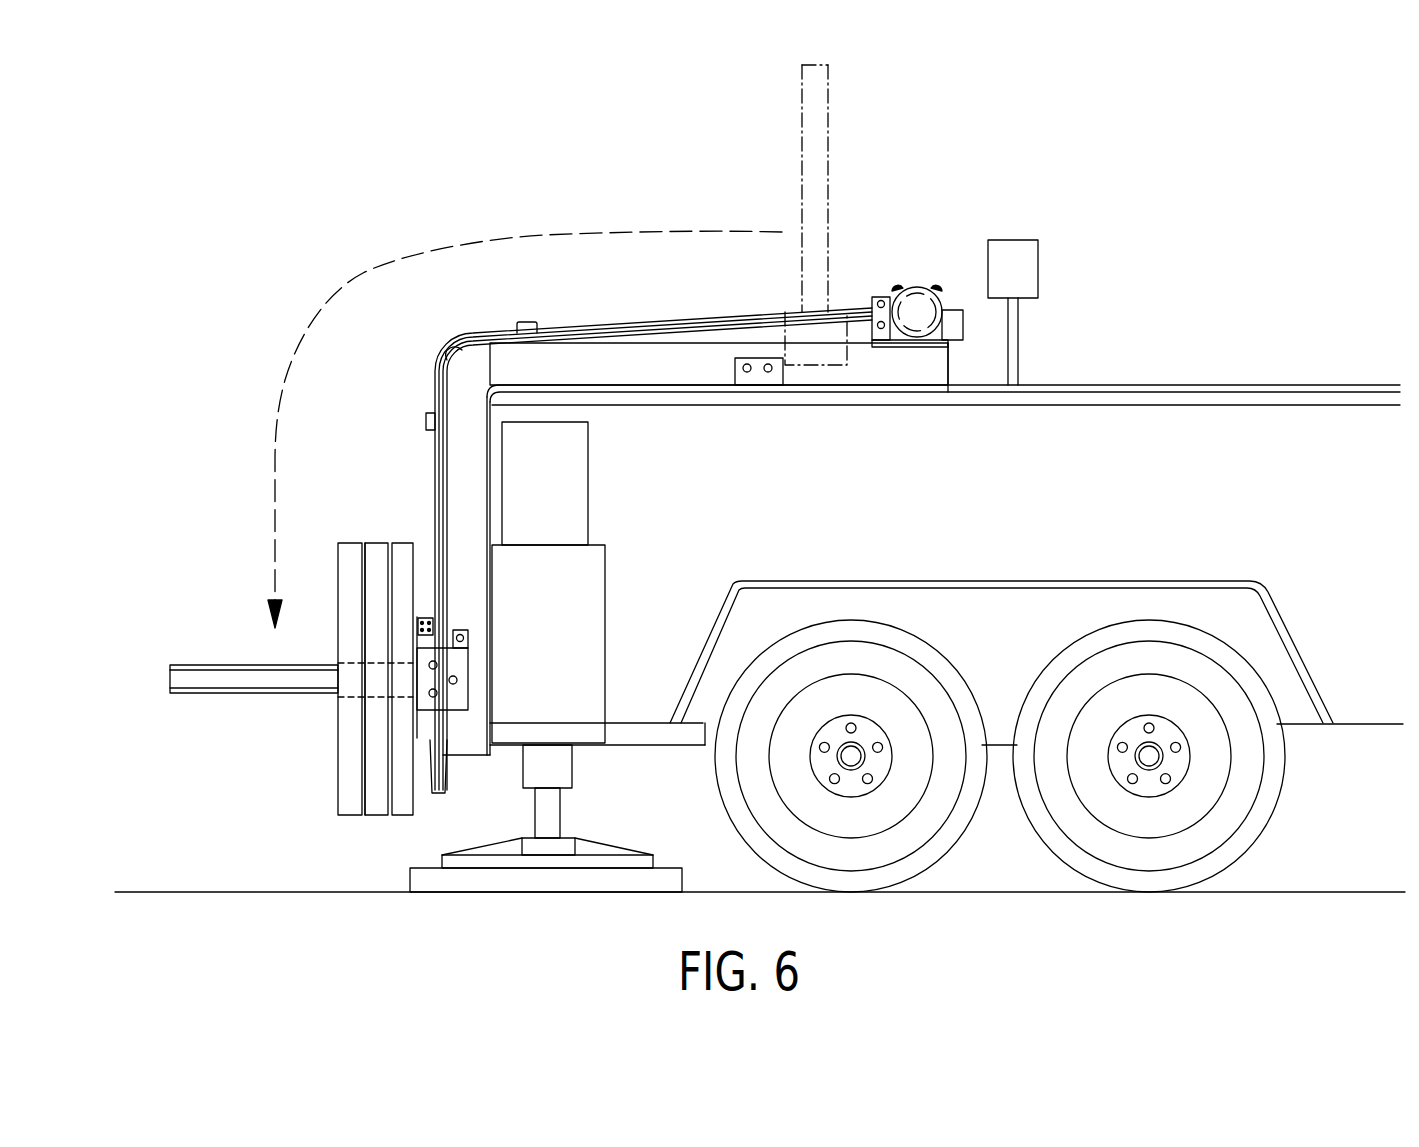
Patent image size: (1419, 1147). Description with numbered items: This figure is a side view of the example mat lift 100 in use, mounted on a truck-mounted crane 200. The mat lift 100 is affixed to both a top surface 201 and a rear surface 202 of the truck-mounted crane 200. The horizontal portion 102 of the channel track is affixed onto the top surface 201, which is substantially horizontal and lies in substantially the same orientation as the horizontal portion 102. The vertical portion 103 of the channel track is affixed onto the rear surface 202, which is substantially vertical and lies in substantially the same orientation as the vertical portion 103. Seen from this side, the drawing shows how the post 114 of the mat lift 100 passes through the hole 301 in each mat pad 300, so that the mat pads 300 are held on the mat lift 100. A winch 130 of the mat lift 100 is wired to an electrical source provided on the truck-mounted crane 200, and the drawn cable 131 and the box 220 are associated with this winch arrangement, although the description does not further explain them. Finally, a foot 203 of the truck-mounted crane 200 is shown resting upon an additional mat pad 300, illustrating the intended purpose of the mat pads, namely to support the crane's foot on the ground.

The mat lift 100 is at (236, 218).
The horizontal portion of the channel track 102 is at (581, 363).
The vertical portion of the channel track 103 is at (468, 486).
The post 114 is at (222, 664).
The winch 130 is at (916, 287).
The winch cable 131 is at (715, 328).
The truck-mounted crane 200 is at (1353, 726).
The top surface 201 is at (1040, 386).
The rear surface 202 is at (491, 475).
The foot 203 is at (626, 832).
The control box 220 is at (1046, 264).
The mat pad 300 is at (400, 817).
The hole 301 is at (352, 698).